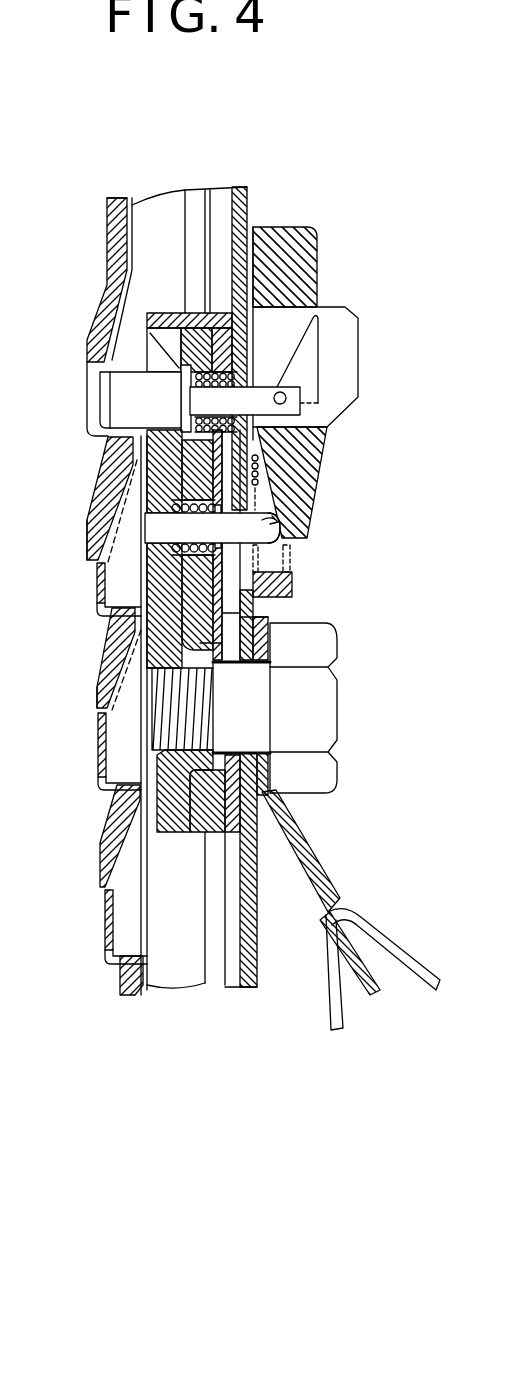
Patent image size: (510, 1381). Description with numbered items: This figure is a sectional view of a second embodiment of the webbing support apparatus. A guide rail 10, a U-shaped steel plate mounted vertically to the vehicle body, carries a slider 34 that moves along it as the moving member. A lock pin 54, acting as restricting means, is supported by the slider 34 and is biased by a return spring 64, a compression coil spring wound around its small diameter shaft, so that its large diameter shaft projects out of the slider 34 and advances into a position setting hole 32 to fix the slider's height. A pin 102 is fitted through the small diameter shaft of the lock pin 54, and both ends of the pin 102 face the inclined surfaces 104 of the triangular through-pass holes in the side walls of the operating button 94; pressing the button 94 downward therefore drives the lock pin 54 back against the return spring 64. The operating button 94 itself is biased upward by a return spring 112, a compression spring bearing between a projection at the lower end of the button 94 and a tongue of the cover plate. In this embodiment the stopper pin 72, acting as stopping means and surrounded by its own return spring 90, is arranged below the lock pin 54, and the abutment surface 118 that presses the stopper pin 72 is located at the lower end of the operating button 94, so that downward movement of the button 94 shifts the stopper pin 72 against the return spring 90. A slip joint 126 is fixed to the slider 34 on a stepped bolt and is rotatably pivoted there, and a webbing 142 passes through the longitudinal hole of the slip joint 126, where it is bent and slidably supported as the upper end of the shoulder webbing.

The guide rail 10 is at (95, 237).
The slider 34 is at (170, 300).
The operating button 94 is at (338, 292).
The return spring 64 is at (222, 365).
The inclined surfaces 104 is at (285, 374).
The pin 102 is at (290, 396).
The lock pin 54 is at (133, 385).
The position setting hole 32 is at (100, 400).
The stopper pin 72 is at (172, 520).
The return spring 90 is at (250, 470).
The abutment surface 118 is at (275, 528).
The return spring 112 is at (292, 582).
The slip joint 126 is at (313, 868).
The webbing 142 is at (383, 940).